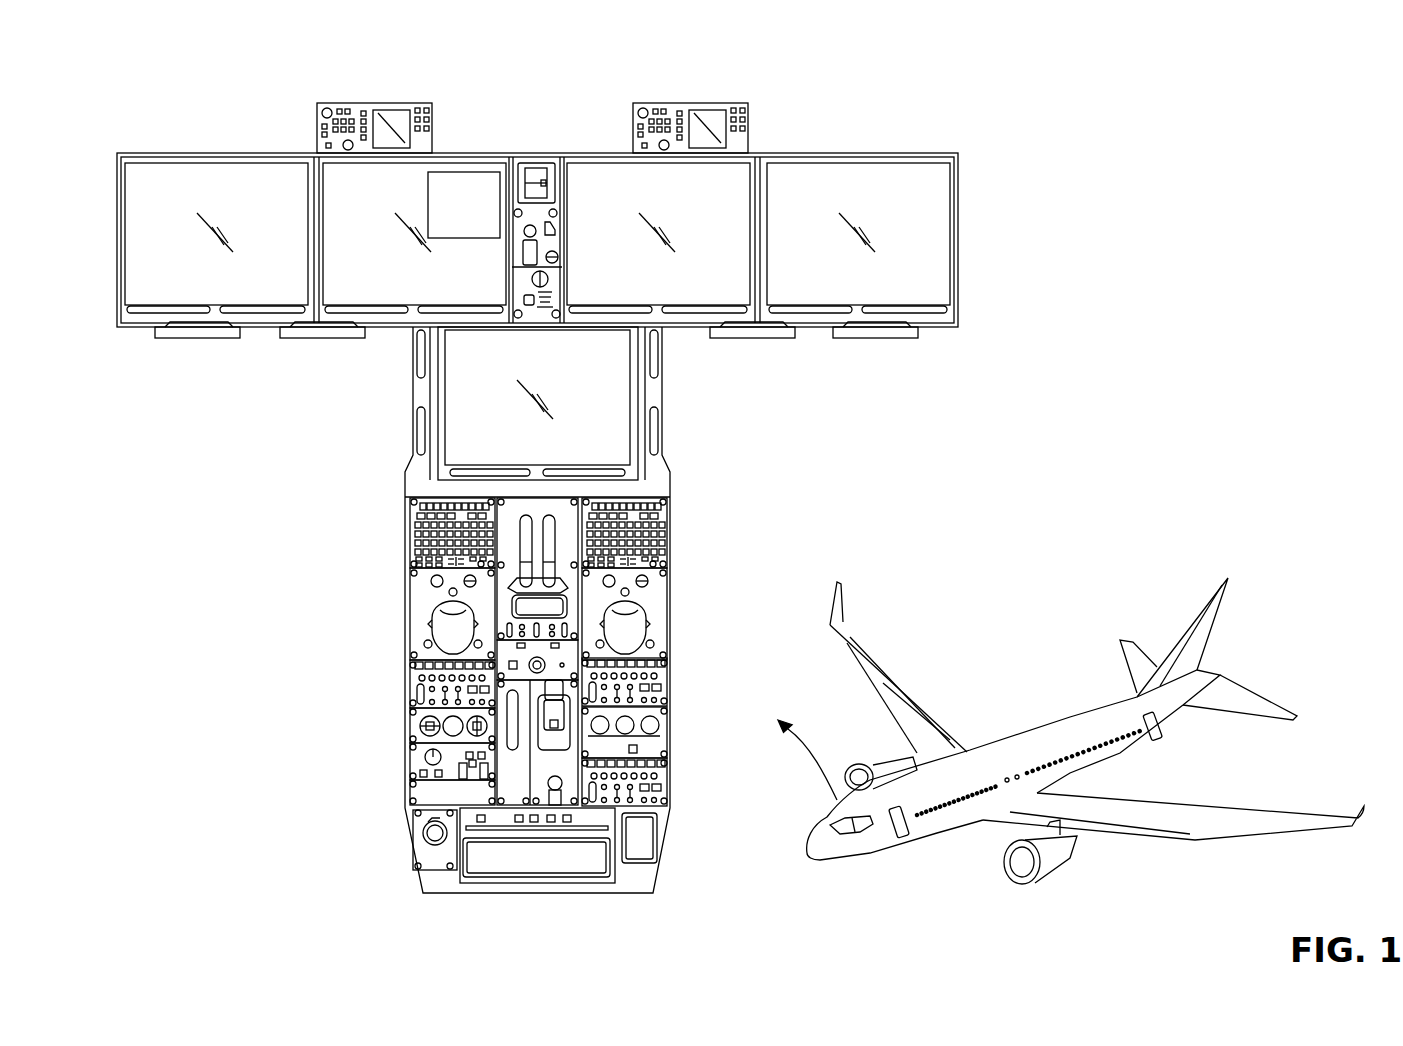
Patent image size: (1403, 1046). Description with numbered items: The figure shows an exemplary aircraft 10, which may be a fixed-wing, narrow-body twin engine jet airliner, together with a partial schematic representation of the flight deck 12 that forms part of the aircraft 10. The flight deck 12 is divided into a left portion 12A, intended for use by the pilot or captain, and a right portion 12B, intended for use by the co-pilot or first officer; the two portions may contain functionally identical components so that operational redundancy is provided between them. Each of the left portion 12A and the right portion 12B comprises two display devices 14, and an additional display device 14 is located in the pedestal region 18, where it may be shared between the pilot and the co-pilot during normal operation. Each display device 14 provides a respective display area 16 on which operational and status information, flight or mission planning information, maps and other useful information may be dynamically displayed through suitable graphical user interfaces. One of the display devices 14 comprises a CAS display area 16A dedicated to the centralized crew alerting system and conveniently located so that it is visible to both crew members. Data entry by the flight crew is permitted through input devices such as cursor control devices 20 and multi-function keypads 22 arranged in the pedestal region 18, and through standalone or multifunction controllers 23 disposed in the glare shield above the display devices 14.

The aircraft 10 is at (1098, 723).
The flight deck 12 is at (976, 126).
The left portion 12A is at (277, 433).
The right portion 12B is at (875, 433).
The display device 14 is at (225, 190).
The display area 16 is at (294, 283).
The CAS display area 16A is at (483, 176).
The pedestal region 18 is at (373, 726).
The cursor control device 20 is at (418, 608).
The multi-function keypad 22 is at (415, 534).
The controller 23 is at (334, 103).